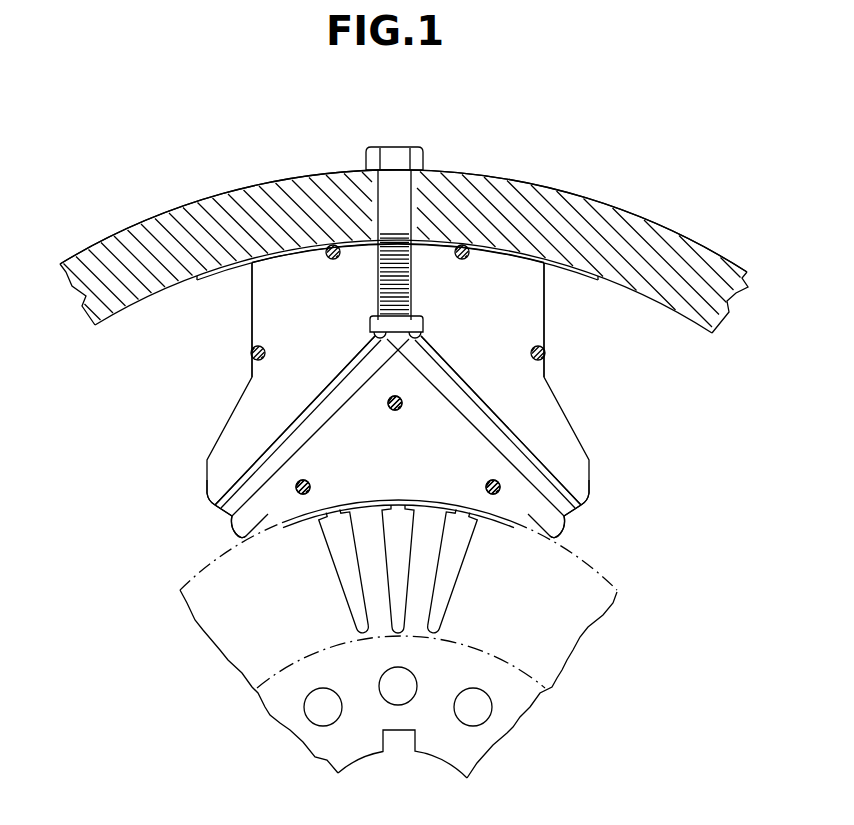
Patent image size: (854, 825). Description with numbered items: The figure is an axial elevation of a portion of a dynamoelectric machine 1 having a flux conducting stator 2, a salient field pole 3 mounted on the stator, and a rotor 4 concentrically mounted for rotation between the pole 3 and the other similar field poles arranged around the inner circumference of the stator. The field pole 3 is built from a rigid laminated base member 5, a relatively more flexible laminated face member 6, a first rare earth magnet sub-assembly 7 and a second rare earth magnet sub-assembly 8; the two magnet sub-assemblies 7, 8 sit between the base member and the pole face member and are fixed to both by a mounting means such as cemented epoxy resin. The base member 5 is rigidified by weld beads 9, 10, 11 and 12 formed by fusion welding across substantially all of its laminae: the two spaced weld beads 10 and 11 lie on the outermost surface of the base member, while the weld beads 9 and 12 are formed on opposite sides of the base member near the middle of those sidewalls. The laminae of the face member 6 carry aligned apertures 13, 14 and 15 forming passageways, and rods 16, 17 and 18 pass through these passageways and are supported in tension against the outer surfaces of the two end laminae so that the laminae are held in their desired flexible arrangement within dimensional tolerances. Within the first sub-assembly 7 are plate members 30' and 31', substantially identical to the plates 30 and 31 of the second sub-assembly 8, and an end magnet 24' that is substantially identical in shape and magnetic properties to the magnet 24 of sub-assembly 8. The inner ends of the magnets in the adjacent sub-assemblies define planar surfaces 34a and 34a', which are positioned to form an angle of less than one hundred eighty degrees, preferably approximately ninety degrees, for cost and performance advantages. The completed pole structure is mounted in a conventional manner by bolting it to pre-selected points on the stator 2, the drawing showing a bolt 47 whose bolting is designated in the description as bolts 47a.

The dynamoelectric machine 1 is at (609, 179).
The flux conducting stator 2 is at (676, 236).
The salient field pole 3 is at (549, 324).
The rotor 4 is at (631, 591).
The rigid laminated base member 5 is at (322, 308).
The flexible laminated face member 6 is at (389, 455).
The first rare earth magnet sub-assembly 7 is at (211, 517).
The second rare earth magnet sub-assembly 8 is at (585, 516).
The weld bead 9 is at (266, 350).
The weld bead 10 is at (328, 257).
The weld bead 11 is at (464, 257).
The weld bead 12 is at (533, 349).
The aperture 13 is at (297, 492).
The aperture 14 is at (403, 404).
The aperture 15 is at (500, 489).
The rod 16 is at (306, 480).
The rod 17 is at (397, 396).
The rod 18 is at (489, 480).
The magnet 24 is at (501, 420).
The end magnet 24' is at (295, 420).
The plate 30 is at (610, 492).
The plate member 30' is at (178, 494).
The plate 31 is at (587, 532).
The plate member 31' is at (210, 531).
The planar surface 34a is at (426, 323).
The planar surface 34a' is at (350, 333).
The bolt 47 is at (424, 160).
The bolt 47a is at (405, 147).